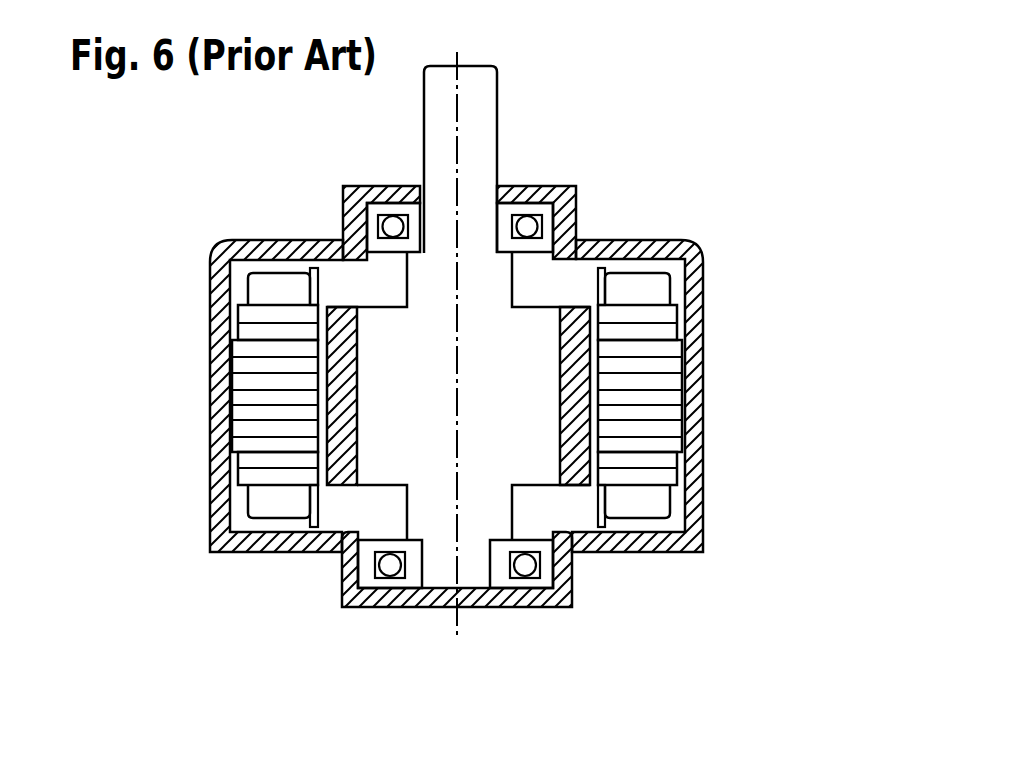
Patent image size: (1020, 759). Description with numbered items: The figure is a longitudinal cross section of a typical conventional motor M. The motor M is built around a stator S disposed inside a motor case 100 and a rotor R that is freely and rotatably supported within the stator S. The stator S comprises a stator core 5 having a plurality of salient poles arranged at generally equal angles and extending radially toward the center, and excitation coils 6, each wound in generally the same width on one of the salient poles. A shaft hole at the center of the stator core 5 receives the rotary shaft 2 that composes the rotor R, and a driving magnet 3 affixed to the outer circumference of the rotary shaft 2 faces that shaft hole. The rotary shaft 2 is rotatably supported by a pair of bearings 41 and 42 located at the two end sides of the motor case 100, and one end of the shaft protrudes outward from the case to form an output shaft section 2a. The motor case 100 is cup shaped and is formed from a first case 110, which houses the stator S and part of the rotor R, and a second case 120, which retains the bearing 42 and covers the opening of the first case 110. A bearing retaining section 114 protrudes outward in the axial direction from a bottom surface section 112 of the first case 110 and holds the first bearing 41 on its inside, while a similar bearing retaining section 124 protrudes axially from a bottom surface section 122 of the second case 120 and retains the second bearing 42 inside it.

The conventional motor M is at (683, 142).
The rotor R is at (362, 300).
The stator S is at (662, 270).
The rotary shaft 2 is at (505, 400).
The output shaft section 2a is at (476, 91).
The driving magnet 3 is at (321, 487).
The stator core 5 is at (665, 382).
The excitation coils 6 is at (640, 290).
The first bearing 41 is at (371, 212).
The second bearing 42 is at (524, 582).
The motor case 100 is at (800, 507).
The first case 110 is at (703, 509).
The bottom surface section 112 is at (633, 240).
The bearing retaining section 114 is at (550, 195).
The second case 120 is at (645, 548).
The bottom surface section 122 is at (252, 548).
The bearing retaining section 124 is at (355, 597).